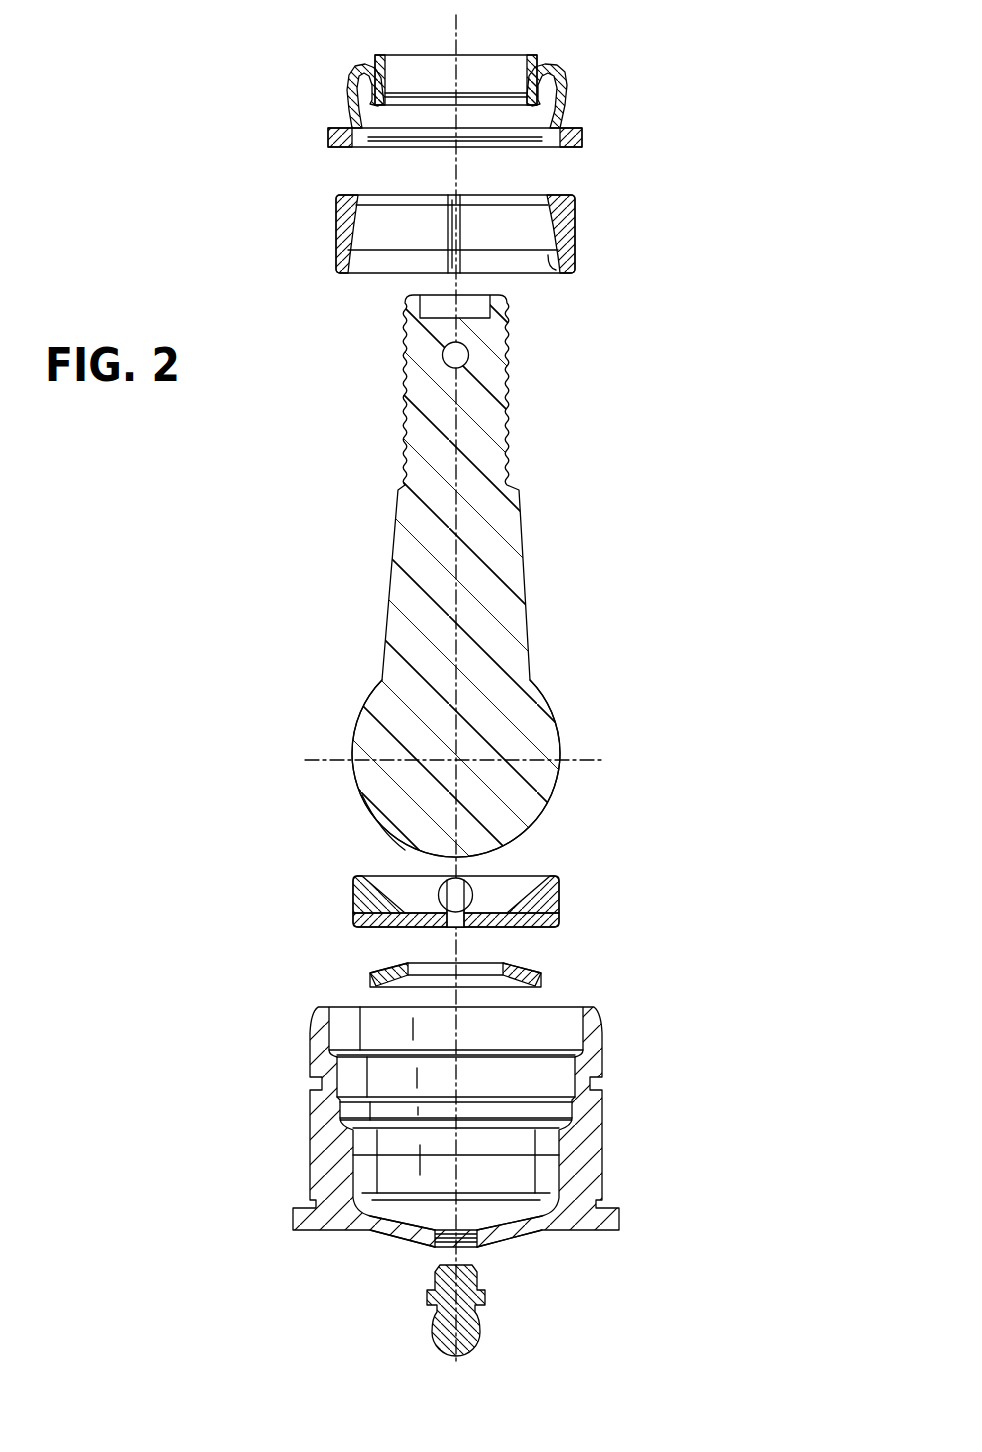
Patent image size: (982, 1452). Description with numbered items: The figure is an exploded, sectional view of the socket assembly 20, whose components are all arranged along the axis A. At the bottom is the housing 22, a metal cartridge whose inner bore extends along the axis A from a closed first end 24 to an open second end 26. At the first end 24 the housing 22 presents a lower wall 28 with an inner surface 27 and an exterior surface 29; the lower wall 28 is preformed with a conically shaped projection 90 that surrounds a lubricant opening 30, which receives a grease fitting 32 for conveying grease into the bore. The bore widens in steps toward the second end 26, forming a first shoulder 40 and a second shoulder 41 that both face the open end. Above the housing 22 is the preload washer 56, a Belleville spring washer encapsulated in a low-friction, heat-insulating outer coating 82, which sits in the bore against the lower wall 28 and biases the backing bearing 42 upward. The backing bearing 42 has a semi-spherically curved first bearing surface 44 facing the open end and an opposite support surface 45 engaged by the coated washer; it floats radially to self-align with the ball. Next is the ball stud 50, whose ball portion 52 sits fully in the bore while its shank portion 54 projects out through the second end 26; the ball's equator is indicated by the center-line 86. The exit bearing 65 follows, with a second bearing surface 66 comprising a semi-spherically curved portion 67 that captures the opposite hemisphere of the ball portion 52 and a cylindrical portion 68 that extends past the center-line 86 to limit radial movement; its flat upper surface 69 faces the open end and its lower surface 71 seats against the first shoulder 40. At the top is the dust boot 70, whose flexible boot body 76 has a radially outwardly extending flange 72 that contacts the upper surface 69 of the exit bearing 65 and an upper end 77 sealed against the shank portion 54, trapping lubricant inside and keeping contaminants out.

The socket assembly 20 is at (725, 308).
The axis A is at (460, 30).
The dust boot 70 is at (350, 60).
The radially outwardly extending flange 72 is at (330, 138).
The boot body 76 is at (566, 98).
The upper end 77 is at (532, 58).
The exit bearing 65 is at (288, 205).
The second bearing surface 66 is at (370, 226).
The semi-spherically curved portion 67 is at (548, 203).
The cylindrical portion 68 is at (552, 270).
The upper surface 69 is at (347, 195).
The lower surface 71 is at (348, 272).
The ball stud 50 is at (530, 548).
The ball portion 52 is at (500, 735).
The shank portion 54 is at (415, 592).
The center-line 86 is at (598, 758).
The backing bearing 42 is at (360, 915).
The first bearing surface 44 is at (408, 884).
The support surface 45 is at (380, 928).
The preload washer 56 is at (332, 973).
The outer coating 82 is at (540, 968).
The housing 22 is at (290, 1160).
The first end 24 is at (490, 1127).
The inner surface 27 is at (515, 1213).
The second end 26 is at (598, 1010).
The second shoulder 41 is at (537, 1048).
The first shoulder 40 is at (512, 1112).
The lower wall 28 is at (530, 1235).
The exterior surface 29 is at (500, 1243).
The conically shaped projection 90 is at (385, 1236).
The lubricant opening 30 is at (432, 1240).
The grease fitting 32 is at (466, 1326).